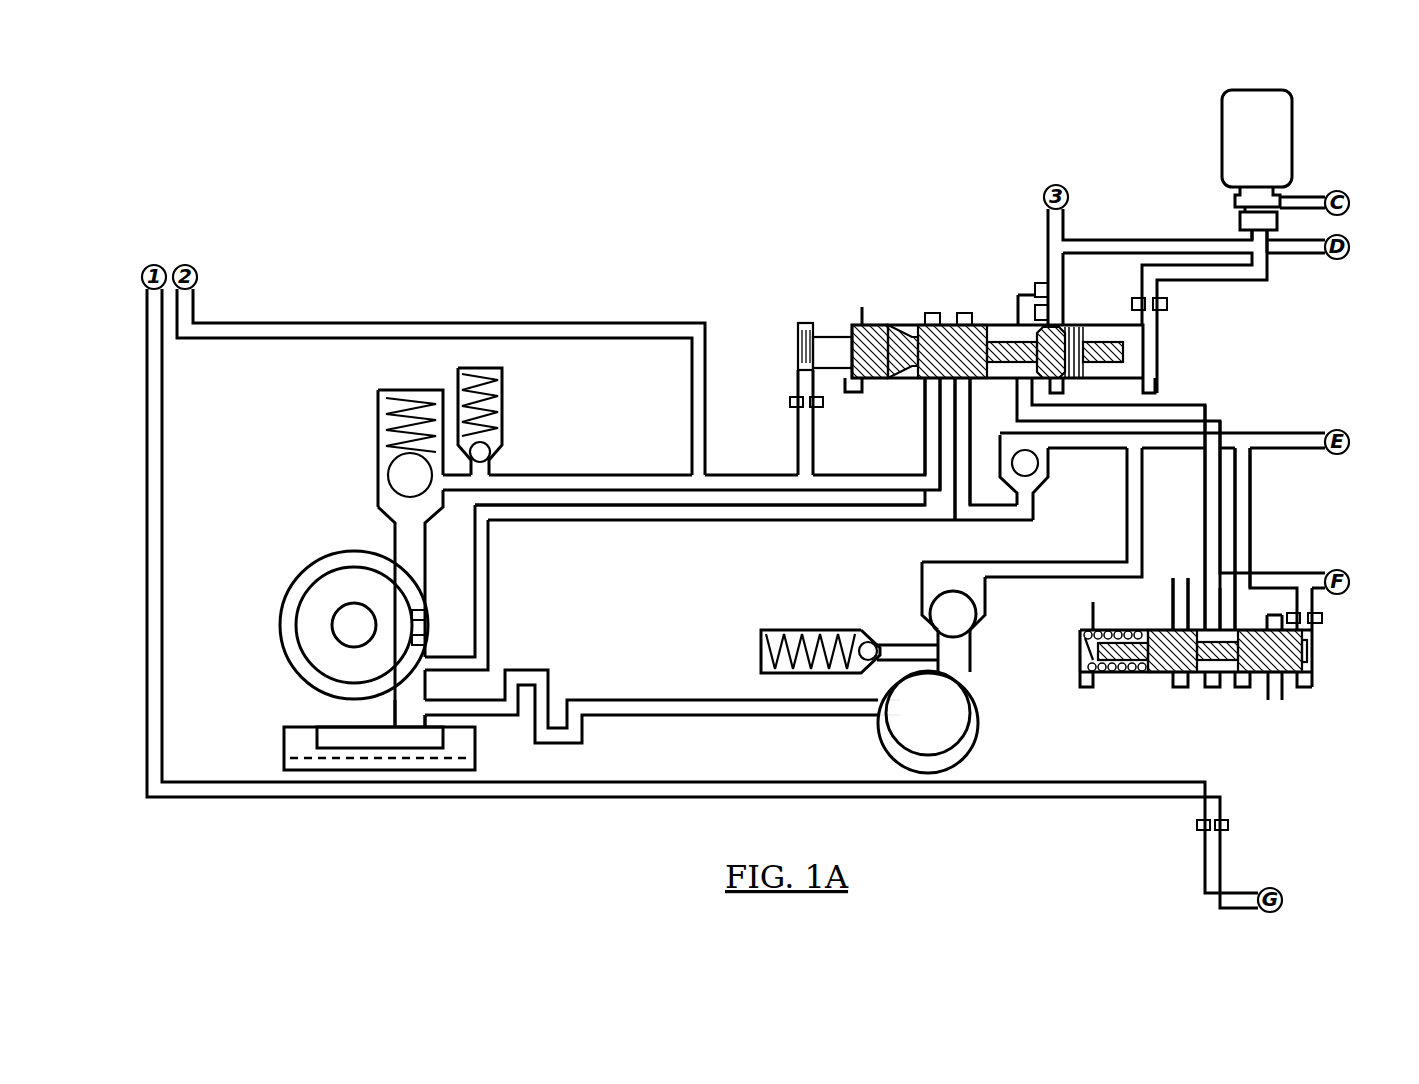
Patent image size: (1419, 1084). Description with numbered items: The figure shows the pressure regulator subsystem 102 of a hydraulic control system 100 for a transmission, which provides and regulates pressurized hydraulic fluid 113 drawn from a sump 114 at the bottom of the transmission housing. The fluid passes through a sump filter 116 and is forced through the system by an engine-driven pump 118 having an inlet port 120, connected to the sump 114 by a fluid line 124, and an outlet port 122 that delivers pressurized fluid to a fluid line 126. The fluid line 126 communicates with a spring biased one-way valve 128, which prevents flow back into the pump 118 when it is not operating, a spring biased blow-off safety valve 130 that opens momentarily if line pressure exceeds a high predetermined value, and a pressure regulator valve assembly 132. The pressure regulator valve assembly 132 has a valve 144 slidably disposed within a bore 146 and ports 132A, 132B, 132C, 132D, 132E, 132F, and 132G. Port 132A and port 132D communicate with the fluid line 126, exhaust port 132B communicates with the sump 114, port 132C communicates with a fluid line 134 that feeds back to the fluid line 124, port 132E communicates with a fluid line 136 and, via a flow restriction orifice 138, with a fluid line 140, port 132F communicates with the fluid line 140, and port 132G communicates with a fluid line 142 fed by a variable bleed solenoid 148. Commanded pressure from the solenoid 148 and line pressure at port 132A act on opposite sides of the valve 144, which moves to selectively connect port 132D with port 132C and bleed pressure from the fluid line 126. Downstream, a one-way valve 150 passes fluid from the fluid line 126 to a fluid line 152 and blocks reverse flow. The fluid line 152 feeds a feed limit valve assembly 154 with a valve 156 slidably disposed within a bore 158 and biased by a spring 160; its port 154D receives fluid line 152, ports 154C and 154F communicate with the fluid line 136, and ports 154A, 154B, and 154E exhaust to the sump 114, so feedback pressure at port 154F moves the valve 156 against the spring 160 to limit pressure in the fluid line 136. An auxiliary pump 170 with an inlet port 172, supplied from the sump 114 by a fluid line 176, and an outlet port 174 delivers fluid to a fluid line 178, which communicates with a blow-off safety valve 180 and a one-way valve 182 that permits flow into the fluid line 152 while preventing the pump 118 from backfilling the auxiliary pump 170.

The hydraulic control system 100 is at (745, 165).
The pressure regulator subsystem 102 is at (1268, 362).
The hydraulic fluid 113 is at (380, 752).
The sump 114 is at (475, 755).
The sump filter 116 is at (318, 735).
The pump 118 is at (280, 617).
The inlet port 120 is at (432, 675).
The outlet port 122 is at (425, 590).
The fluid line 124 is at (398, 700).
The fluid line 126 is at (500, 322).
The one-way valve 128 is at (378, 442).
The blow-off safety valve 130 is at (504, 422).
The pressure regulator valve assembly 132 is at (1160, 364).
The port 132A is at (800, 372).
The exhaust port 132B is at (850, 320).
The port 132C is at (932, 380).
The port 132D is at (962, 380).
The fluid port 132E is at (1022, 300).
The fluid port 132F is at (1132, 303).
The port 132G is at (1170, 304).
The fluid line 134 is at (735, 507).
The fluid line 136 is at (1312, 197).
The flow restriction orifice 138 is at (1040, 284).
The fluid line 140 is at (1108, 235).
The fluid line 142 is at (1278, 272).
The valve 144 is at (945, 325).
The bore 146 is at (858, 322).
The variable bleed solenoid 148 is at (1222, 112).
The one-way valve 150 is at (1048, 480).
The fluid line 152 is at (1275, 433).
The feed limit valve assembly 154 is at (1320, 683).
The exhaust port 154A is at (1088, 630).
The exhaust port 154B is at (1170, 645).
The port 154C is at (1175, 605).
The port 154D is at (1245, 630).
The exhaust port 154E is at (1275, 675).
The port 154F is at (1314, 622).
The valve 156 is at (1172, 652).
The bore 158 is at (1112, 672).
The spring 160 is at (1085, 655).
The auxiliary pump 170 is at (978, 725).
The inlet port 172 is at (890, 700).
The outlet port 174 is at (962, 690).
The fluid line 176 is at (655, 700).
The fluid line 178 is at (972, 655).
The blow-off safety valve 180 is at (810, 630).
The one-way valve 182 is at (922, 605).